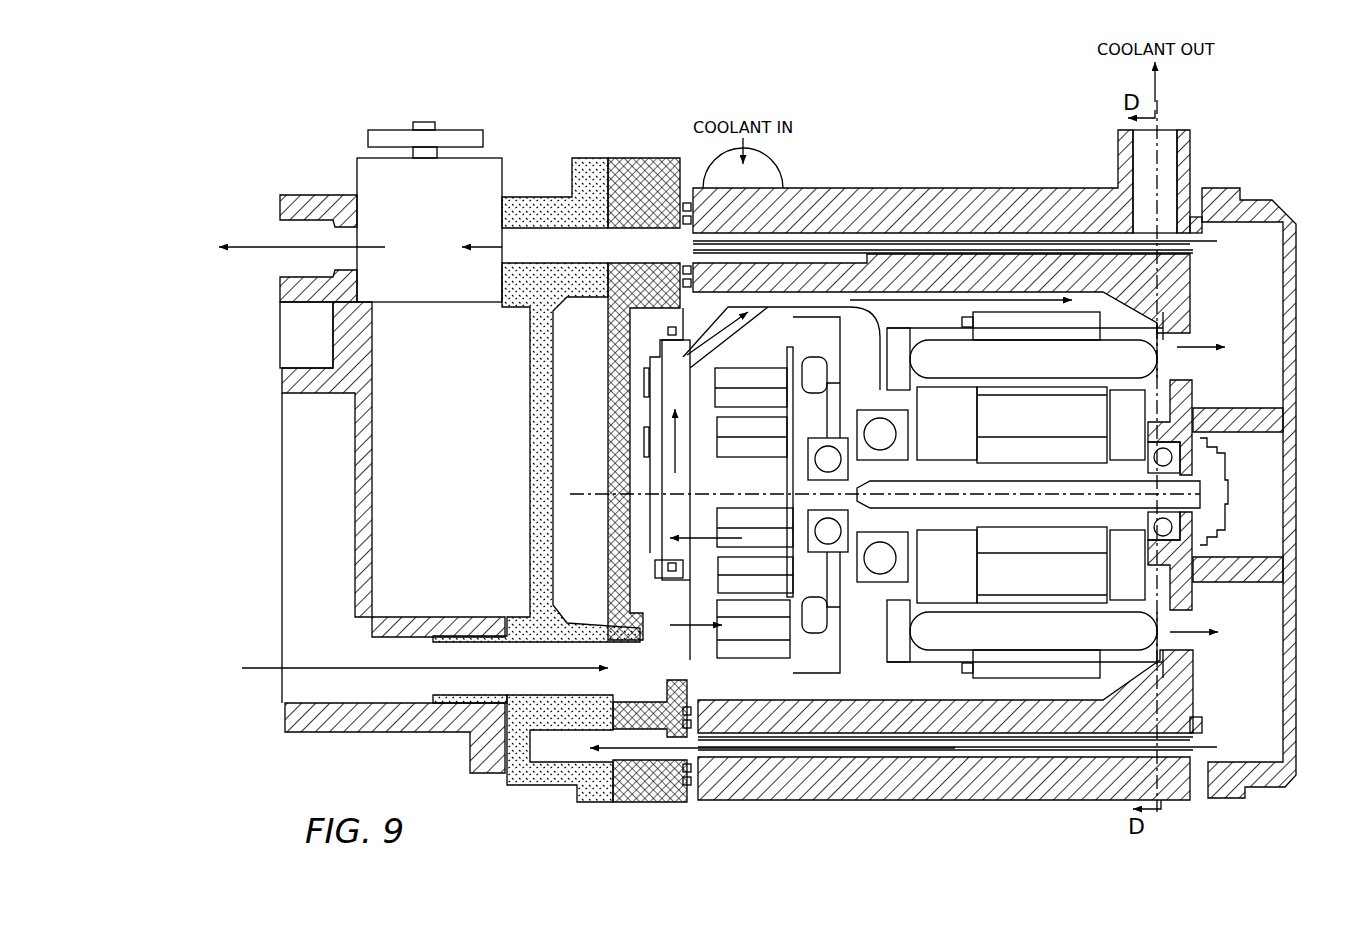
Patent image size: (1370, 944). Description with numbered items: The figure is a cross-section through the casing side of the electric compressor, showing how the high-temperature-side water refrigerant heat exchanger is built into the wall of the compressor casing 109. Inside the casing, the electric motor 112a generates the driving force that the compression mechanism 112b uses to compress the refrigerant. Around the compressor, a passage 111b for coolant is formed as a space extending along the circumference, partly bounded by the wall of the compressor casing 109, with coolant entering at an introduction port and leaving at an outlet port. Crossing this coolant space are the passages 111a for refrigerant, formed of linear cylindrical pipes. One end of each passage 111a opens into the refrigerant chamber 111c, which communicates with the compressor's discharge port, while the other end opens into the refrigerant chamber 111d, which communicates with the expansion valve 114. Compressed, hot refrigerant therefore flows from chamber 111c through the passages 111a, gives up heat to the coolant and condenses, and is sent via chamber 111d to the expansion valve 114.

The compressor casing 109 is at (1012, 189).
The passages for refrigerant 111a is at (910, 240).
The passage for coolant 111b is at (832, 233).
The refrigerant chamber 111c is at (1283, 329).
The refrigerant chamber 111d is at (548, 235).
The electric motor 112a is at (1019, 668).
The compression mechanism 112b is at (723, 664).
The expansion valve 114 is at (359, 174).